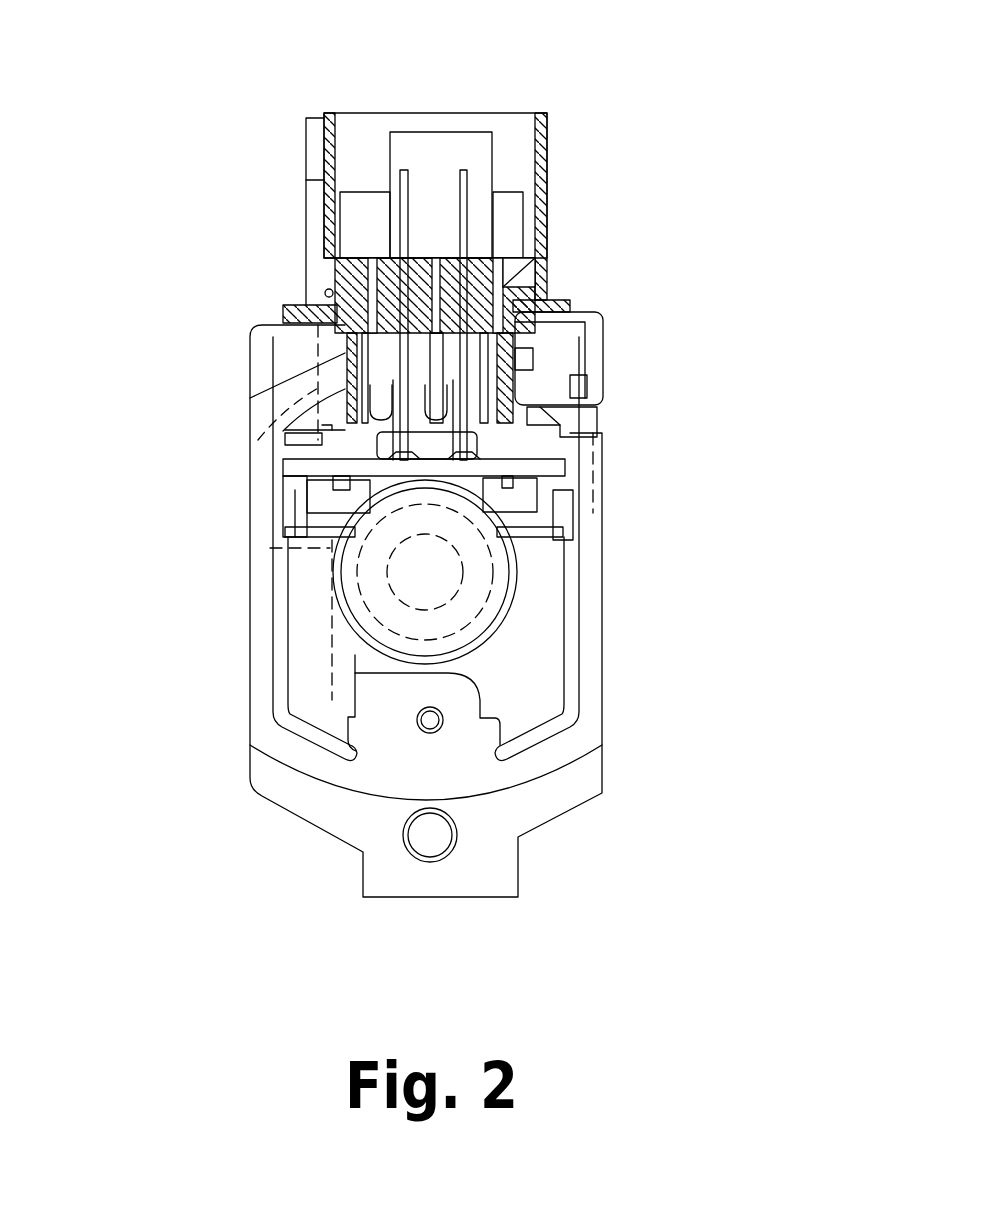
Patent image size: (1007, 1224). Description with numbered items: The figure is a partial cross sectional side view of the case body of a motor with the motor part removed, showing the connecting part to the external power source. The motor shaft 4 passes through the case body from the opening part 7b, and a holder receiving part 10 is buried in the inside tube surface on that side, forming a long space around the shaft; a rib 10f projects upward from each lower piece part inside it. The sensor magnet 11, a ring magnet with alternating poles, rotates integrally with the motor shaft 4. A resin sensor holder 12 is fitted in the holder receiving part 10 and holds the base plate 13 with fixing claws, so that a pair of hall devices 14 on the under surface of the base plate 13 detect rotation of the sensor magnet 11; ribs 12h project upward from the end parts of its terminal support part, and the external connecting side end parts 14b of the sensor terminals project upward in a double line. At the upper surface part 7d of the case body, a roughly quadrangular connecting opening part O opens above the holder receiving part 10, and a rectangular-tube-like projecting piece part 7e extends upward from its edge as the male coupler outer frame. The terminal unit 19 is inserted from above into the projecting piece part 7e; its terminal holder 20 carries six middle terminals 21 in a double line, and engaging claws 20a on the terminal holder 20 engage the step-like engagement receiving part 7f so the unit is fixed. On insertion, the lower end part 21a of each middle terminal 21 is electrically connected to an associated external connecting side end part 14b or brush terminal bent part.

The motor shaft 4 is at (495, 655).
The opening part 7b is at (533, 748).
The upper surface part 7d is at (283, 307).
The projecting piece part 7e is at (330, 238).
The engagement receiving part 7f is at (505, 395).
The holder receiving part 10 is at (555, 518).
The rib 10f is at (307, 540).
The sensor magnet 11 is at (512, 615).
The sensor holder 12 is at (514, 512).
The ribs 12h is at (283, 420).
The base plate 13 is at (545, 466).
The hall devices 14 is at (440, 547).
The external connecting side end parts 14b is at (465, 374).
The terminal unit 19 is at (378, 200).
The terminal holder 20 is at (485, 283).
The engaging claws 20a is at (560, 428).
The middle terminals 21 is at (470, 195).
The lower end part 21a is at (515, 335).
The connecting opening part O is at (327, 292).